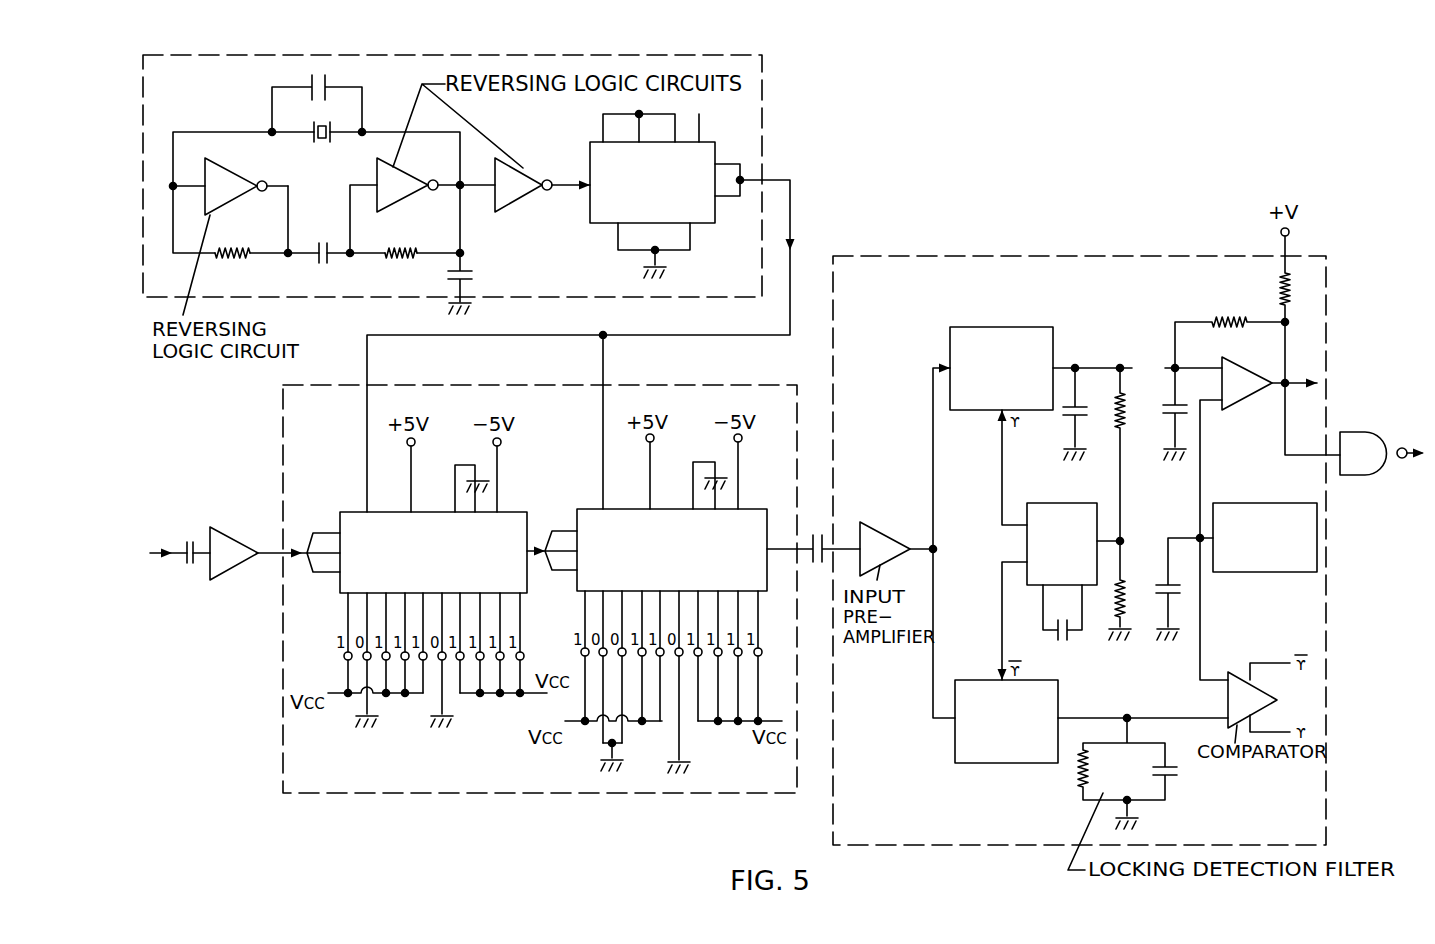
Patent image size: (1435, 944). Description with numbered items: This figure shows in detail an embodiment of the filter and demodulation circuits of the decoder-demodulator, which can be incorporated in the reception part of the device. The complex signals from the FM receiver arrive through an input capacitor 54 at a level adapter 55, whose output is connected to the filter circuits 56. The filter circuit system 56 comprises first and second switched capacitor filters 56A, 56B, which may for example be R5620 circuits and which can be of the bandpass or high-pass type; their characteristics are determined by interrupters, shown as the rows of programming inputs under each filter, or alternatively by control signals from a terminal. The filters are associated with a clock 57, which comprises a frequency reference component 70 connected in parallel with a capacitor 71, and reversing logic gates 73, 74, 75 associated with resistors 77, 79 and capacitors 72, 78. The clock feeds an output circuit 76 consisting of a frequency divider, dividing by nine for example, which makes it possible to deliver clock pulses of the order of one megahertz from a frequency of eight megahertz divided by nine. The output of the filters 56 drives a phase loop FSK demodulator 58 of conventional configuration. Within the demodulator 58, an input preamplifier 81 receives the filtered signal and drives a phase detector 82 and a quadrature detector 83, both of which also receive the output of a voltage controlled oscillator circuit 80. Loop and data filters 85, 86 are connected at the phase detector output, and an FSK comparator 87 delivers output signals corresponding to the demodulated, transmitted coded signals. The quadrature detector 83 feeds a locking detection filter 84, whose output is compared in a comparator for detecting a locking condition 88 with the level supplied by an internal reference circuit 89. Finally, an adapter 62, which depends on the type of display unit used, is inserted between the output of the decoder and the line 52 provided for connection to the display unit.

The line 52 is at (1410, 443).
The input capacitor 54 is at (190, 545).
The level adapter 55 is at (240, 540).
The filter circuits 56 is at (270, 420).
The first switched capacitor filter 56A is at (357, 510).
The second switched capacitor filter 56B is at (588, 507).
The clock 57 is at (770, 87).
The phase loop FSK demodulator 58 is at (995, 246).
The adapter 62 is at (1367, 432).
The frequency reference component 70 is at (321, 144).
The capacitor 71 is at (310, 76).
The capacitor 72 is at (465, 272).
The reversing logic gate 73 is at (232, 176).
The reversing logic gate 74 is at (406, 172).
The reversing logic gate 75 is at (520, 170).
The output circuit 76 is at (607, 227).
The resistor 77 is at (232, 258).
The capacitor 78 is at (323, 263).
The resistor 79 is at (402, 258).
The voltage controlled oscillator circuit 80 is at (1045, 503).
The input preamplifier 81 is at (888, 530).
The phase detector 82 is at (997, 327).
The quadrature detector 83 is at (955, 743).
The locking detection filter 84 is at (1185, 791).
The loop filter 85 is at (1133, 418).
The data filter 86 is at (1155, 334).
The FSK comparator 87 is at (1243, 403).
The comparator for detecting a locking condition 88 is at (1247, 673).
The internal reference circuit 89 is at (1265, 572).